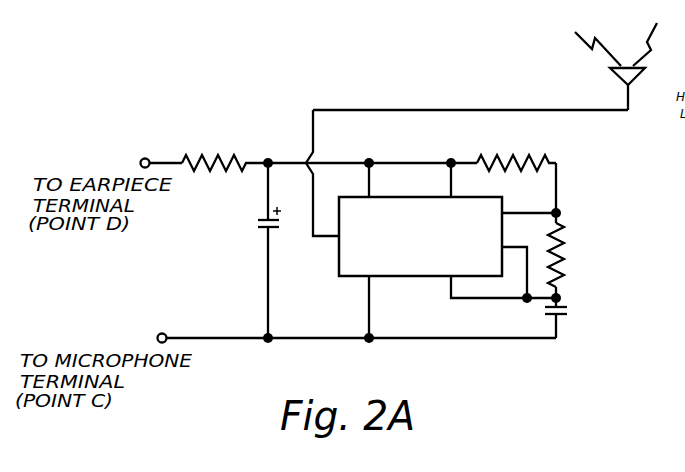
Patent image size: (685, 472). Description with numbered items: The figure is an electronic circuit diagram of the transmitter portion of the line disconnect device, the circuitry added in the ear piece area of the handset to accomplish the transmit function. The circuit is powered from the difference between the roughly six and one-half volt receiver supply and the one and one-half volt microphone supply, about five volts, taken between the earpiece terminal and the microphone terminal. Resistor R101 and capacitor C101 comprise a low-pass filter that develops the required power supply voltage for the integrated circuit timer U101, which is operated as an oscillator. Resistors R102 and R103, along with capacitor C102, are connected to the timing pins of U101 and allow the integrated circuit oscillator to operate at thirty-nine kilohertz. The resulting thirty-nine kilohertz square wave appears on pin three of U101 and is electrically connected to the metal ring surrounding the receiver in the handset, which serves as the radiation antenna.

The resistor R101 is at (216, 146).
The capacitor C101 is at (244, 250).
The integrated circuit timer U101 is at (447, 250).
The resistor R102 is at (516, 148).
The resistor R103 is at (581, 255).
The capacitor C102 is at (581, 314).